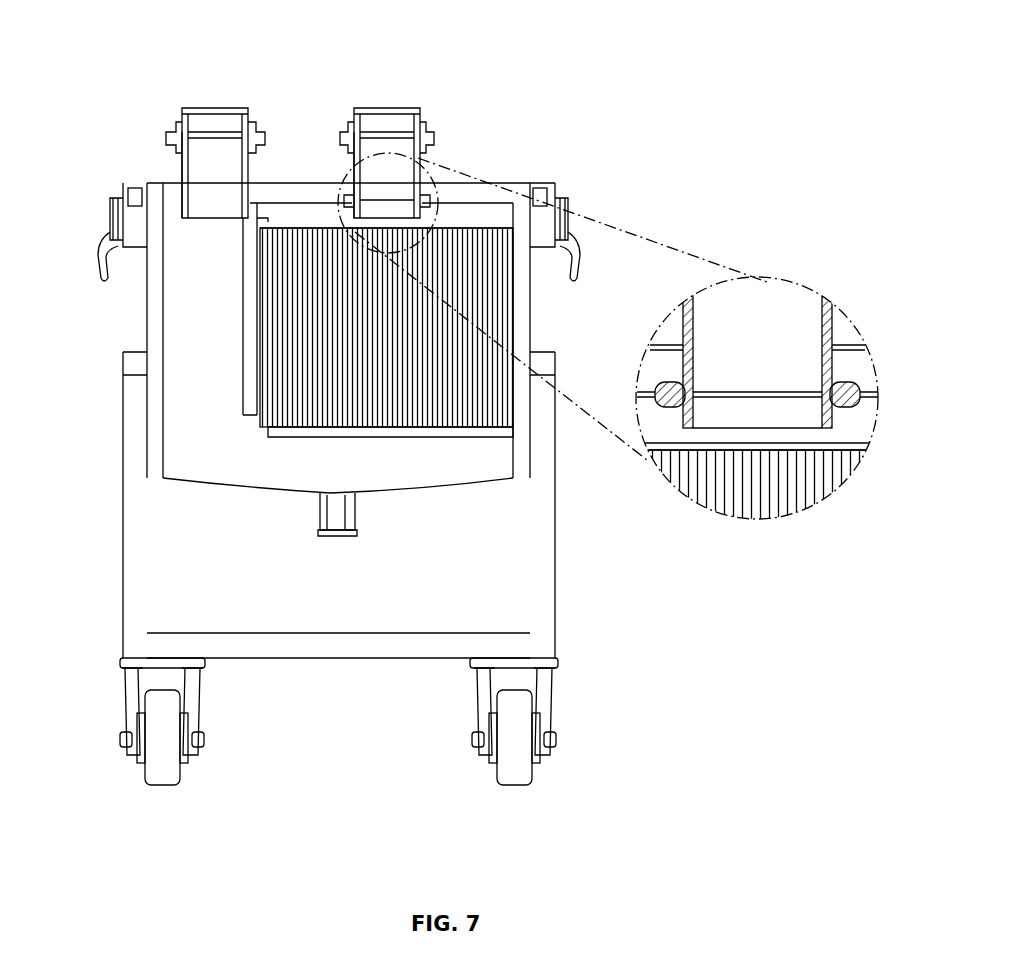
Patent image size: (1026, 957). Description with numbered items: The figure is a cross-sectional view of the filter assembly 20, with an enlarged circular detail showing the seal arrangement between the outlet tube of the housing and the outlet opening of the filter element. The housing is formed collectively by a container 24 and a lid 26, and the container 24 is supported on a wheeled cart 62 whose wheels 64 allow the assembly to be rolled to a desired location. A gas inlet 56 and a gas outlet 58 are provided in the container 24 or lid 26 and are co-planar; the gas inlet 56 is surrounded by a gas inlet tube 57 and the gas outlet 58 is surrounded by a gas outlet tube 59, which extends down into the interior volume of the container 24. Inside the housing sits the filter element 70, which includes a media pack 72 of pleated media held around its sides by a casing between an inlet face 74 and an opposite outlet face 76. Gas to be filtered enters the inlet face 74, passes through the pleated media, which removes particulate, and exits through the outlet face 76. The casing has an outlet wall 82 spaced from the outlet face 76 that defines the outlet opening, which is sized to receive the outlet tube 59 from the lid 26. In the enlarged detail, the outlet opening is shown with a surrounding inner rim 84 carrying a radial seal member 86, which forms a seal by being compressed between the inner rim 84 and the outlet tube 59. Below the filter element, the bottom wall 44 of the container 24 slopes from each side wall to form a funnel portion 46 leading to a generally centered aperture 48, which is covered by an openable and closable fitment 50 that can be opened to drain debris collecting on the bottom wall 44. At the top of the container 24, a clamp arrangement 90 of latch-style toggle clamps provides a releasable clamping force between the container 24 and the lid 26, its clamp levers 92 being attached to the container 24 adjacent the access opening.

The filter assembly 20 is at (462, 78).
The container 24 is at (147, 297).
The lid 26 is at (513, 183).
The bottom wall 44 is at (205, 485).
The funnel portion 46 is at (258, 490).
The aperture 48 is at (325, 496).
The fitment 50 is at (332, 537).
The gas inlet 56 is at (237, 153).
The gas inlet tube 57 is at (182, 160).
The gas outlet 58 is at (410, 143).
The gas outlet tube 59 is at (352, 170).
The wheeled cart 62 is at (123, 527).
The wheels 64 is at (163, 780).
The filter element 70 is at (243, 256).
The media pack 72 is at (258, 375).
The inlet face 74 is at (372, 428).
The outlet face 76 is at (470, 228).
The outlet wall 82 is at (290, 203).
The inner rim 84 is at (680, 385).
The seal member 86 is at (842, 385).
The clamp arrangement 90 is at (108, 210).
The clamp levers 92 is at (100, 268).